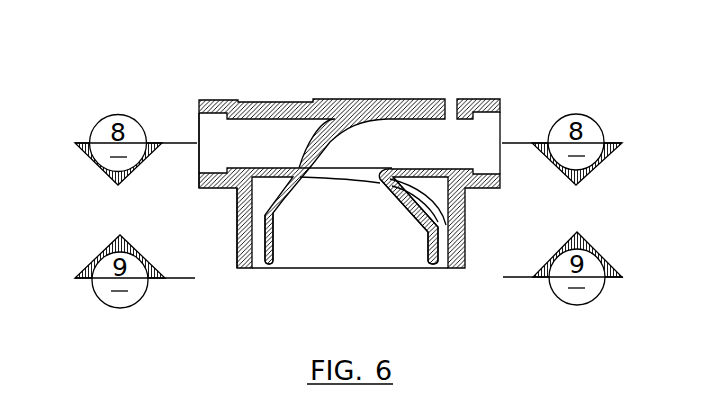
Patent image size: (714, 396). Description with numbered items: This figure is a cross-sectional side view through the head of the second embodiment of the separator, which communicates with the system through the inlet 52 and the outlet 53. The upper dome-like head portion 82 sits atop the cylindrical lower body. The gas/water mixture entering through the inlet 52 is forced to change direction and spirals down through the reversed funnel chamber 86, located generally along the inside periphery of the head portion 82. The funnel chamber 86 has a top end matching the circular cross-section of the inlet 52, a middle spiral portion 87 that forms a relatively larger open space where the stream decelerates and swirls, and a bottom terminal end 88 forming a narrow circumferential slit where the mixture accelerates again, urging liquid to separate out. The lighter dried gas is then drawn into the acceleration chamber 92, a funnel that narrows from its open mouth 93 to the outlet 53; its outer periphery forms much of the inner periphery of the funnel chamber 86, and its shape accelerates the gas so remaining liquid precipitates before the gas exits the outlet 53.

The inlet 52 is at (189, 171).
The outlet 53 is at (511, 171).
The head portion 82 is at (228, 233).
The funnel chamber 86 is at (213, 125).
The middle spiral portion 87 is at (247, 202).
The terminal end 88 is at (258, 272).
The acceleration chamber 92 is at (391, 142).
The open mouth 93 is at (408, 269).